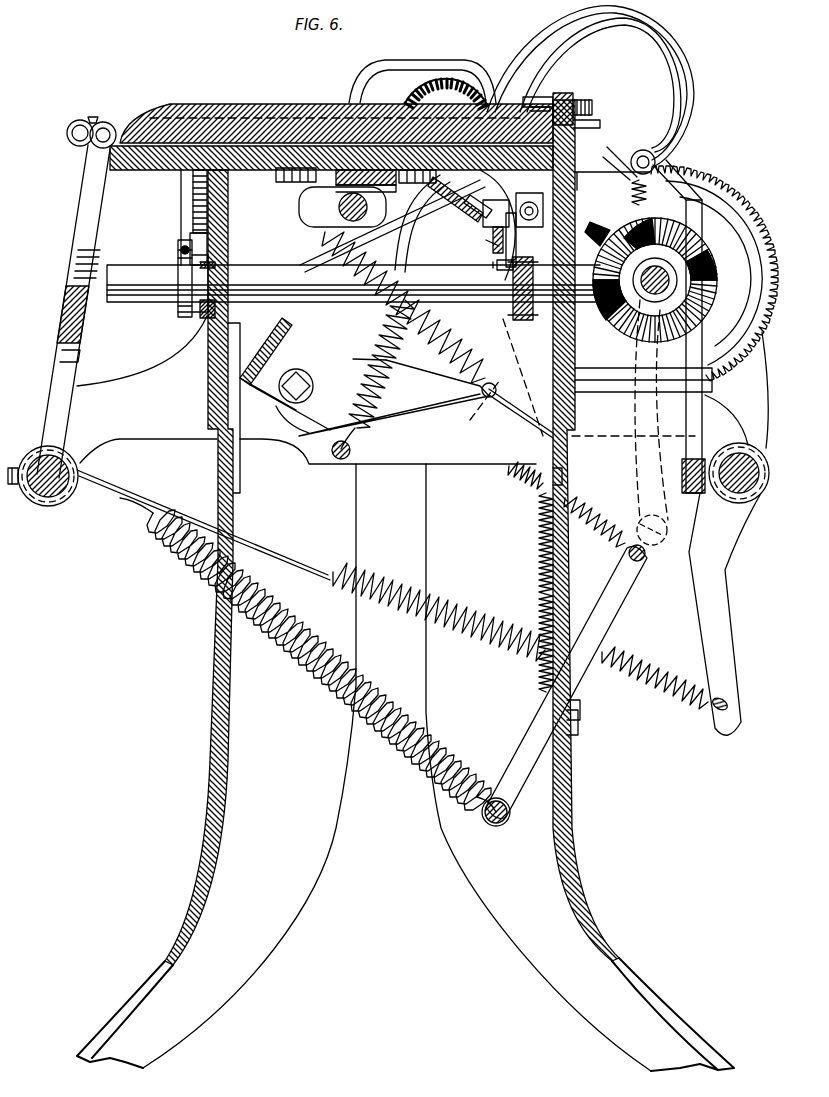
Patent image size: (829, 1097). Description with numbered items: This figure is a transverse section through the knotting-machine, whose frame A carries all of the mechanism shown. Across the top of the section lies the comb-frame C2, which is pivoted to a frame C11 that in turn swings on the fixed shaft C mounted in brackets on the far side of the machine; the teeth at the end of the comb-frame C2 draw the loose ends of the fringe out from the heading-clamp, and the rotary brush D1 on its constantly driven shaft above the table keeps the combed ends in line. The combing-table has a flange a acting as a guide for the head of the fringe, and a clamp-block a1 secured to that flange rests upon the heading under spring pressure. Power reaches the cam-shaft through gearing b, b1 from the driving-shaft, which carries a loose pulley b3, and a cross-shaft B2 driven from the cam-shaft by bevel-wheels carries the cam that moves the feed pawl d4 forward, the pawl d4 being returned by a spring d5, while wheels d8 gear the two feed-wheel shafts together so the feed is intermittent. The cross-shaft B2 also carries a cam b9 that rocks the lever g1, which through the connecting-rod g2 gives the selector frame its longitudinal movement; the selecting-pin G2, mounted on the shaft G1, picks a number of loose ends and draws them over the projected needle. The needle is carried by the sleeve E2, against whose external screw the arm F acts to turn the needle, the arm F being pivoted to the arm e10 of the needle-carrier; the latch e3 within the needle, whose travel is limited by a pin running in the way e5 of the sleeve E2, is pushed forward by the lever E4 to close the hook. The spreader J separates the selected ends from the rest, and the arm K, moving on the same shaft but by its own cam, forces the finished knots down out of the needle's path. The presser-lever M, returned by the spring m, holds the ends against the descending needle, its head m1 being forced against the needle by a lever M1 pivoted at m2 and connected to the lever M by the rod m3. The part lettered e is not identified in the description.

The comb-frame C2 is at (310, 125).
The rotary brush D1 is at (432, 92).
The selecting-pin G2 is at (422, 70).
The arm K is at (677, 36).
The spreader J is at (667, 48).
The clamp-block a1 is at (540, 103).
The flange a is at (574, 110).
The frame A is at (248, 198).
The gear-wheels d8 is at (207, 208).
The pawl d4 is at (190, 240).
The spring d5 is at (178, 262).
The cross-shaft B2 is at (353, 290).
The frame C11 is at (73, 311).
The fixed shaft C is at (169, 448).
The way e5 is at (308, 655).
The spring e is at (479, 577).
The arm e10 is at (574, 670).
The spring m is at (665, 675).
The presser-lever M is at (512, 186).
The lever M1 is at (700, 398).
The rod m3 is at (696, 486).
The pivot m2 is at (643, 377).
The gear-wheel b is at (655, 280).
The loose pulley b3 is at (597, 224).
The gear-wheel b1 is at (738, 356).
The cam b9 is at (523, 288).
The connecting-rod g2 is at (497, 268).
The lever g1 is at (497, 320).
The sleeve E2 is at (409, 311).
The lever E4 is at (426, 400).
The latch e3 is at (285, 374).
The shaft G1 is at (356, 197).
The arm F is at (408, 223).
The head m1 is at (480, 202).